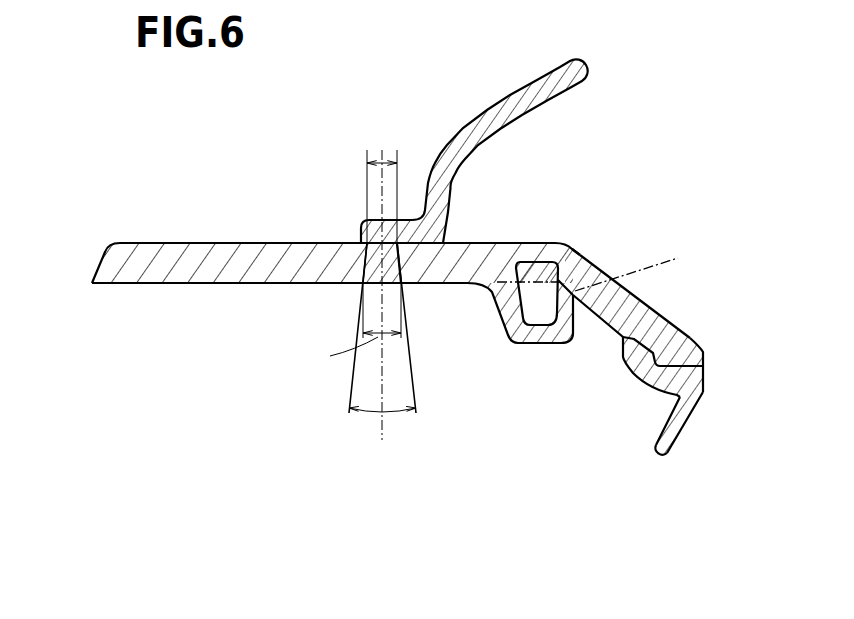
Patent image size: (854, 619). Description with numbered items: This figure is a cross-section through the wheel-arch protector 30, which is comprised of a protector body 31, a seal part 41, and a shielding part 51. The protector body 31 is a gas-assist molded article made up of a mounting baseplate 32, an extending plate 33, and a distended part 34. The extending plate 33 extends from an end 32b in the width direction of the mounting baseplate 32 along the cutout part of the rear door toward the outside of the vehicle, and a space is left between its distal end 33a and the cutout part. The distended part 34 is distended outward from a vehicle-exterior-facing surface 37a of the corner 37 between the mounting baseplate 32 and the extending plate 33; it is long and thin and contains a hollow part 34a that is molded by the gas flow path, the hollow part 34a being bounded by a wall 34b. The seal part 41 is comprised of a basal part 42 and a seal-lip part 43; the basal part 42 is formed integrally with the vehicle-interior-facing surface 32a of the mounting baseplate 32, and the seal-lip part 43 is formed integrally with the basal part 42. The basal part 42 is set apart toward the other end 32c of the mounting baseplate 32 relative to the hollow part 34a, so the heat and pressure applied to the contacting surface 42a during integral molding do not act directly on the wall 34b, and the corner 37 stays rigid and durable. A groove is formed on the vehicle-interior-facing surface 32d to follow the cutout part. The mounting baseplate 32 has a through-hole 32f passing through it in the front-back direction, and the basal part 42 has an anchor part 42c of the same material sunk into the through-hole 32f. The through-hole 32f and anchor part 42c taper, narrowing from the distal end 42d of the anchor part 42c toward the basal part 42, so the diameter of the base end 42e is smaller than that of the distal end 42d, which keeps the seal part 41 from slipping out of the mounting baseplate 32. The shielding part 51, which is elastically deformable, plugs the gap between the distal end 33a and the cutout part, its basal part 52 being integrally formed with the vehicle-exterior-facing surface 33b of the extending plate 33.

The wheel-arch protector 30 is at (68, 168).
The protector body 31 is at (395, 314).
The mounting baseplate 32 is at (475, 290).
The vehicle-interior-facing surface of the mounting baseplate 32a is at (153, 284).
The end of the mounting baseplate 32b is at (592, 258).
The other end of the mounting baseplate 32c is at (92, 278).
The vehicle-interior-facing surface of the mounting baseplate 32d is at (155, 243).
The through-hole 32f is at (390, 284).
The extending plate 33 is at (600, 322).
The distal end of the extending plate 33a is at (704, 353).
The vehicle-exterior-facing surface of the extending plate 33b is at (635, 337).
The distended part 34 is at (536, 350).
The hollow part 34a is at (528, 288).
The wall 34b is at (574, 257).
The corner 37 is at (575, 282).
The vehicle-exterior-facing surface of the corner 37a is at (646, 267).
The seal part 41 is at (422, 171).
The basal part 42 is at (407, 210).
The contacting surface 42a is at (462, 243).
The anchor part 42c is at (364, 264).
The distal end of the anchor part 42d is at (365, 290).
The base end of the anchor part 42e is at (364, 254).
The seal-lip part 43 is at (492, 100).
The shielding part 51 is at (685, 434).
The basal part of the shielding part 52 is at (704, 388).